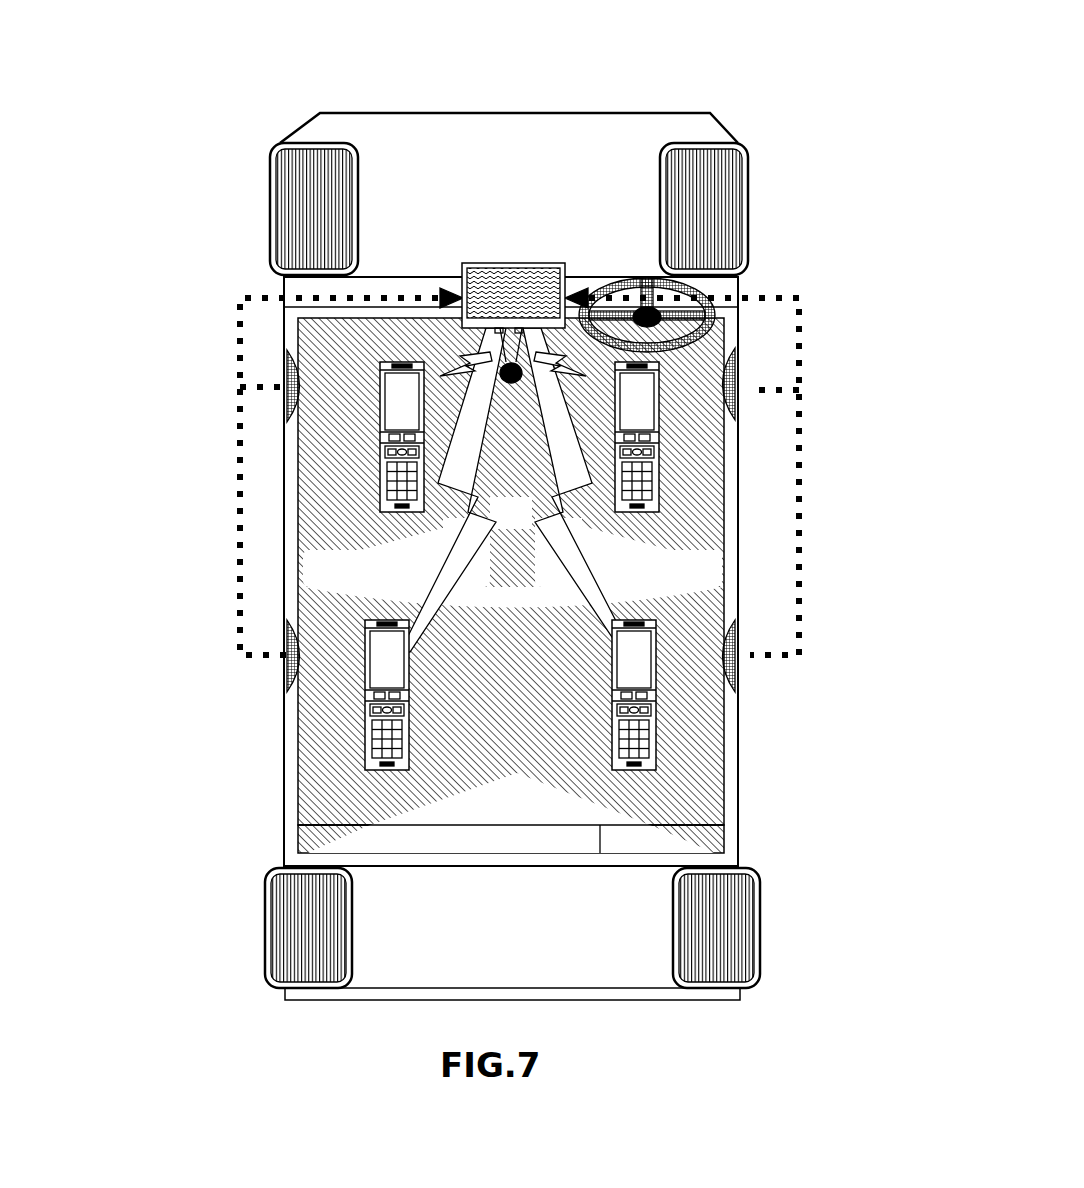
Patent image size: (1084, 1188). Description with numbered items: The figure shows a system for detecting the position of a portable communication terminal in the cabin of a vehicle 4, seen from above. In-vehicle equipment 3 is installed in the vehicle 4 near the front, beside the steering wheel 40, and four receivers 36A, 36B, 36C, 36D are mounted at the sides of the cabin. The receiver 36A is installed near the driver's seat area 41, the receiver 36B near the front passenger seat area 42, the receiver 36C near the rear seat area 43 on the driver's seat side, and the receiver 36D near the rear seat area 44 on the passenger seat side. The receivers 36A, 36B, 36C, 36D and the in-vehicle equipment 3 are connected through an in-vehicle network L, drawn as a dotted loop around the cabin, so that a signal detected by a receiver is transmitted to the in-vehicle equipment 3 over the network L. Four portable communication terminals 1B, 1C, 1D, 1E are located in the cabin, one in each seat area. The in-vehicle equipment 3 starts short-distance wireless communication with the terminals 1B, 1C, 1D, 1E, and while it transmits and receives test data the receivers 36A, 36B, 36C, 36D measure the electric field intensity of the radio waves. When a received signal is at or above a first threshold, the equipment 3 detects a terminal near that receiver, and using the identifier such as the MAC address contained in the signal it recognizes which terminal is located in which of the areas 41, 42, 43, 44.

The vehicle 4 is at (530, 84).
The in-vehicle equipment 3 is at (512, 264).
The steering wheel 40 is at (705, 300).
The receiver 36A is at (738, 362).
The receiver 36B is at (285, 362).
The receiver 36C is at (740, 630).
The receiver 36D is at (287, 626).
The portable communication terminal 1B is at (640, 400).
The portable communication terminal 1C is at (405, 395).
The portable communication terminal 1D is at (640, 660).
The portable communication terminal 1E is at (385, 650).
The driver's seat area 41 is at (690, 530).
The front passenger seat area 42 is at (345, 535).
The rear seat area on the driver's seat side 43 is at (690, 790).
The rear seat area on the passenger seat side 44 is at (380, 812).
The in-vehicle network L is at (236, 566).